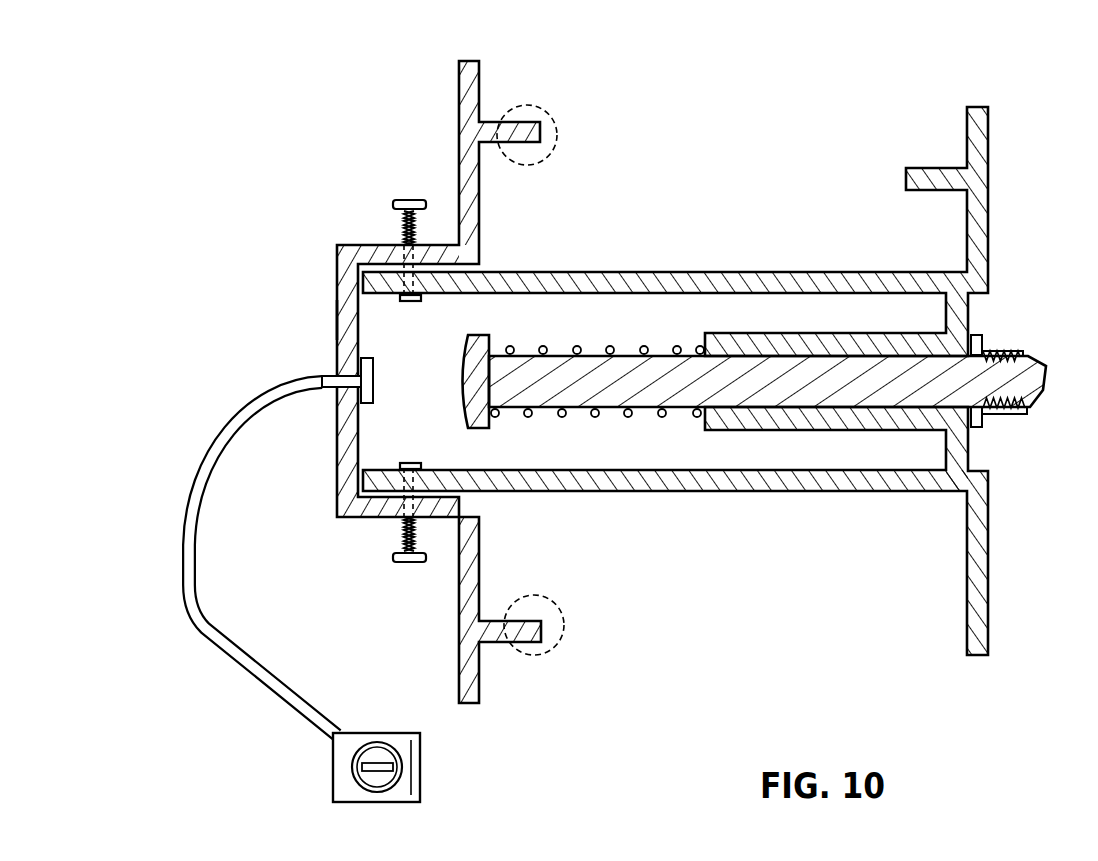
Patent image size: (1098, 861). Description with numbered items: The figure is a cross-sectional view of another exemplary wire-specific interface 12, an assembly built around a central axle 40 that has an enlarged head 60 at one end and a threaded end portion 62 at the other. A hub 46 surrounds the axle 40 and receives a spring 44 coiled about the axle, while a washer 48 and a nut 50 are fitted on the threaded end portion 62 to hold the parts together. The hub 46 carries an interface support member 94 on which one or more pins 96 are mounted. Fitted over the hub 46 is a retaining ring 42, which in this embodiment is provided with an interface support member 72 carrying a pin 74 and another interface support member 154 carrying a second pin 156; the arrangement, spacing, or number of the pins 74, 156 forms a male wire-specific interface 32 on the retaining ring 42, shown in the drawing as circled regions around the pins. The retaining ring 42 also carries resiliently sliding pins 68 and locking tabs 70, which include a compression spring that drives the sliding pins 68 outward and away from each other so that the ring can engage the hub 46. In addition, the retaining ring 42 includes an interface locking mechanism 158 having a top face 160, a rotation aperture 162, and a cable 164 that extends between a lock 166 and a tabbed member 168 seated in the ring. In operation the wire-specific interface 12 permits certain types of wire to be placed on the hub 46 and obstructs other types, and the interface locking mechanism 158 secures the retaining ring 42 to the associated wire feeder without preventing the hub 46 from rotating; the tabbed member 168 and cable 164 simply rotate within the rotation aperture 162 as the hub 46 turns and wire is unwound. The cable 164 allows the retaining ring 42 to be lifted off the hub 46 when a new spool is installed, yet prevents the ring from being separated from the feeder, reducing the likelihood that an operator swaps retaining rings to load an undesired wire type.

The wire-specific interface 12 is at (308, 33).
The wire-specific male interface 32 is at (542, 108).
The axle 40 is at (770, 395).
The retaining ring 42 is at (352, 243).
The spring 44 is at (525, 417).
The hub 46 is at (745, 265).
The washer 48 is at (977, 336).
The nut 50 is at (997, 414).
The head 60 is at (460, 378).
The threaded end portion 62 is at (1045, 378).
The resiliently sliding pins 68 is at (410, 200).
The locking tabs 70 is at (412, 301).
The interface support member 72 is at (459, 95).
The pin 74 is at (528, 143).
The interface support member 94 is at (988, 175).
The pins 96 is at (912, 168).
The interface support member 154 is at (483, 680).
The second pin 156 is at (532, 643).
The interface locking mechanism 158 is at (290, 564).
The top face 160 is at (338, 318).
The rotation aperture 162 is at (335, 375).
The cable 164 is at (281, 680).
The lock 166 is at (380, 733).
The tabbed member 168 is at (376, 381).